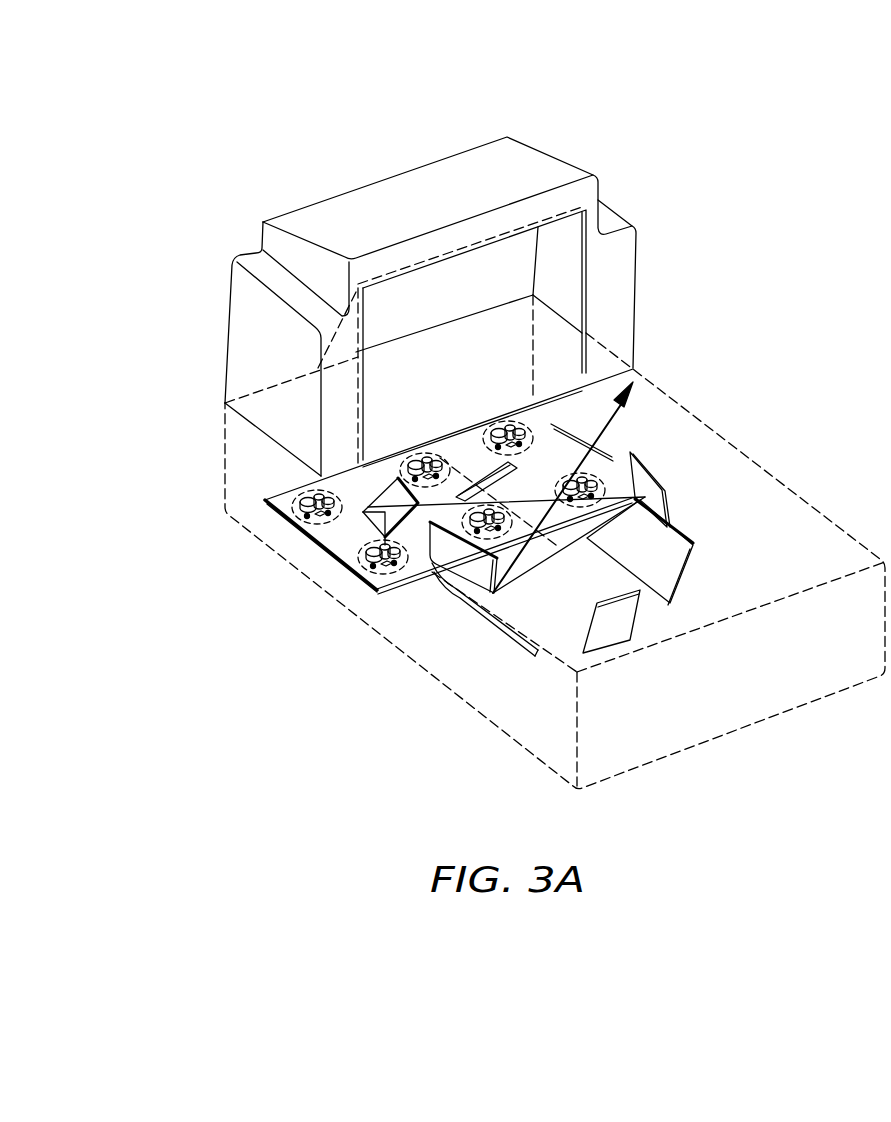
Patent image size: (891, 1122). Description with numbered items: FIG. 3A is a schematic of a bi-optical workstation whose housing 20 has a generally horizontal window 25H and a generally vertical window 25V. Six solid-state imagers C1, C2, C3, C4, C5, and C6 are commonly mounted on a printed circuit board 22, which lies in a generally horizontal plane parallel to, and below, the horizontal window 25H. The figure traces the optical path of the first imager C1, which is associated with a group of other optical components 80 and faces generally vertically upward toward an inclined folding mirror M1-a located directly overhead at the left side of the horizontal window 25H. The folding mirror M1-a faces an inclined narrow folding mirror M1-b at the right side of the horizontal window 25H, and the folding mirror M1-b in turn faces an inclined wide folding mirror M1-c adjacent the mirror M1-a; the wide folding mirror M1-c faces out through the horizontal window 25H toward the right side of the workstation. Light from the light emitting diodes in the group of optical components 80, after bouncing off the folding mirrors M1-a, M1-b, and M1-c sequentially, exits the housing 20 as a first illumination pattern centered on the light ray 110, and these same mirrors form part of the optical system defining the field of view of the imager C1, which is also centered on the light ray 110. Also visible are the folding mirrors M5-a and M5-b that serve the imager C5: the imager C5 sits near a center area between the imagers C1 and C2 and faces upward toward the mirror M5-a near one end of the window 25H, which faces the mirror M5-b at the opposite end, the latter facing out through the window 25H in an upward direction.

The housing 20 is at (611, 311).
The printed circuit board 22 is at (332, 543).
The generally vertical window 25V is at (558, 262).
The generally horizontal window 25H is at (573, 553).
The group of other optical components 80 is at (365, 570).
The light ray 110 is at (641, 393).
The solid-state imager C1 is at (387, 574).
The solid-state imager C2 is at (605, 458).
The solid-state imager C3 is at (304, 492).
The solid-state imager C4 is at (497, 460).
The solid-state imager C5 is at (468, 528).
The solid-state imager C6 is at (412, 460).
The inclined folding mirror M1-a is at (370, 505).
The inclined narrow folding mirror M1-b is at (662, 486).
The inclined wide folding mirror M1-c is at (510, 628).
The inclined folding mirror M5-a is at (486, 472).
The inclined folding mirror M5-b is at (613, 632).